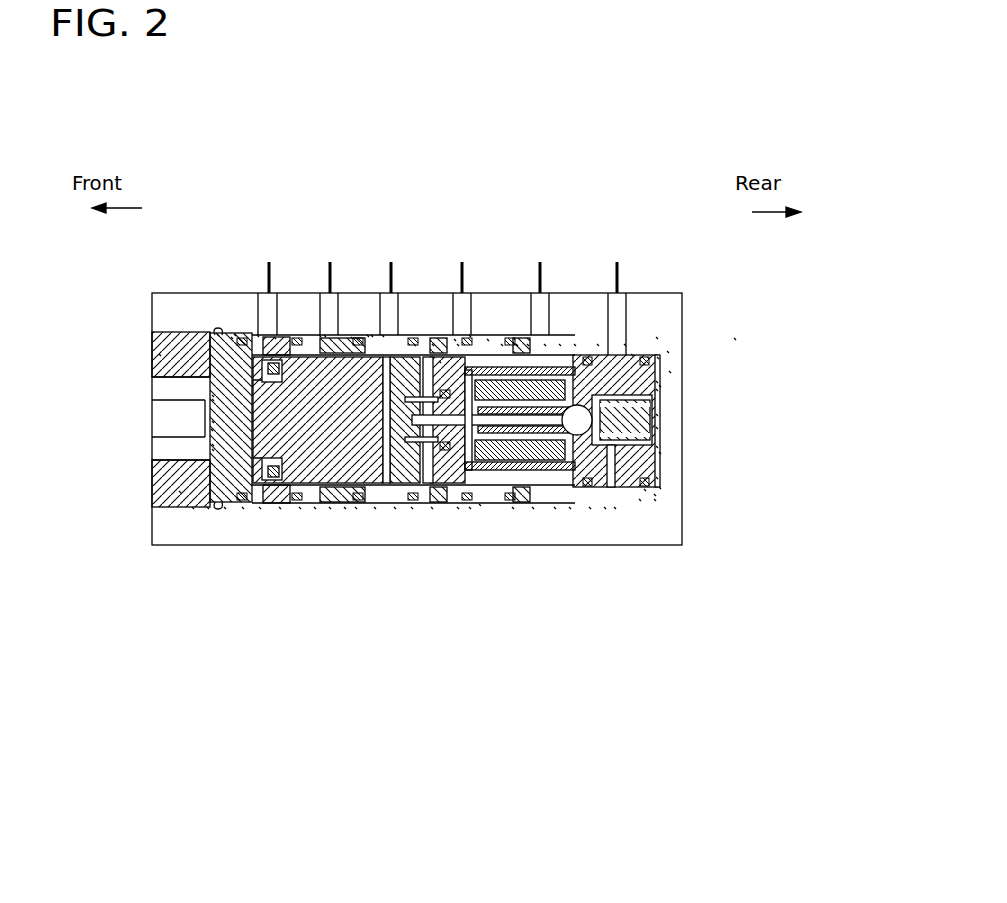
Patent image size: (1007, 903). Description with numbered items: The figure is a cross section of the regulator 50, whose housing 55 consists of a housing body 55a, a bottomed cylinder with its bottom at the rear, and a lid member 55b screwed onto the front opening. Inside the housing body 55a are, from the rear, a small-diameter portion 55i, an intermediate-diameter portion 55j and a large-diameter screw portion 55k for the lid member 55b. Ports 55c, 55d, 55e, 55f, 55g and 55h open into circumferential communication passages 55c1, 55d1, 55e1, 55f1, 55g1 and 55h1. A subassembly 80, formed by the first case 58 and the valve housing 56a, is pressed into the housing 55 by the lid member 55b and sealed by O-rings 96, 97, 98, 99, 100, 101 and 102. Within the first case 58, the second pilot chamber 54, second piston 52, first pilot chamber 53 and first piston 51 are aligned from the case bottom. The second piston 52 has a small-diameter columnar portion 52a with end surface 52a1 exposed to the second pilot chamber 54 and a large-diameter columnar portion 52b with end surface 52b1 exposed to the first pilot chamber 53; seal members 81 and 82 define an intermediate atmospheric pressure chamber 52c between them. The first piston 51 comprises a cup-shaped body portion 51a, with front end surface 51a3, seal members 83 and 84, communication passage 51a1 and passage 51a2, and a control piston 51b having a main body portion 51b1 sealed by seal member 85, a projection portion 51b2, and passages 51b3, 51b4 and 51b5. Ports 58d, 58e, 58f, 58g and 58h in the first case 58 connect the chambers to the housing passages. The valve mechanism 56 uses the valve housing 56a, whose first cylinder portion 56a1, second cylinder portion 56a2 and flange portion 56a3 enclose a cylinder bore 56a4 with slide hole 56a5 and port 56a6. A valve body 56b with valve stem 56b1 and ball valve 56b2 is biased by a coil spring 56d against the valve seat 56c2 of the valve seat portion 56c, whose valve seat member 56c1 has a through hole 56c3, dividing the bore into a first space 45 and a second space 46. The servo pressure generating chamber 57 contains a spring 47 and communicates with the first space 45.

The first space 45 is at (625, 345).
The second space 46 is at (676, 364).
The spring 47 is at (528, 345).
The regulator 50 is at (742, 334).
The first piston 51 is at (450, 503).
The body portion 51a is at (415, 345).
The communication passage 51a1 is at (502, 345).
The passage 51a2 is at (235, 335).
The front end surface 51a3 is at (395, 508).
The control piston 51b is at (433, 345).
The main body portion 51b1 is at (440, 362).
The projection portion 51b2 is at (480, 504).
The passage 51b3 is at (555, 508).
The passage 51b4 is at (213, 396).
The communication passage 51b5 is at (213, 400).
The second piston 52 is at (255, 435).
The small-diameter columnar portion 52a is at (213, 450).
The end surface 52a1 is at (213, 422).
The large-diameter columnar portion 52b is at (356, 508).
The end surface 52b1 is at (412, 508).
The intermediate atmospheric pressure chamber 52c is at (300, 508).
The first pilot chamber 53 is at (352, 338).
The second pilot chamber 54 is at (208, 508).
The housing 55 is at (165, 530).
The housing body 55a is at (193, 508).
The lid member 55b is at (180, 492).
The port 55c is at (657, 338).
The communication passage 55c1 is at (655, 500).
The port 55d is at (560, 345).
The communication passage 55d1 is at (545, 345).
The port 55e is at (470, 336).
The communication passage 55e1 is at (455, 340).
The port 55f is at (383, 336).
The communication passage 55f1 is at (372, 336).
The port 55g is at (320, 336).
The communication passage 55g1 is at (325, 336).
The port 55h is at (258, 336).
The communication passage 55h1 is at (232, 338).
The small-diameter portion 55i is at (660, 488).
The intermediate-diameter portion 55j is at (517, 345).
The large-diameter screw portion 55k is at (160, 355).
The valve mechanism 56 is at (660, 378).
The valve housing 56a is at (657, 478).
The first cylinder portion 56a1 is at (660, 453).
The second cylinder portion 56a2 is at (213, 445).
The flange portion 56a3 is at (605, 508).
The cylinder bore 56a4 is at (657, 447).
The slide hole 56a5 is at (657, 390).
The port 56a6 is at (645, 490).
The valve body 56b is at (657, 415).
The valve stem 56b1 is at (657, 428).
The ball valve 56b2 is at (632, 355).
The valve seat portion 56c is at (615, 508).
The valve seat member 56c1 is at (598, 345).
The valve seat 56c2 is at (658, 358).
The through hole 56c3 is at (640, 500).
The coil spring 56d is at (657, 382).
The servo pressure generating chamber 57 is at (590, 508).
The first case 58 is at (190, 527).
The port 58d is at (575, 345).
The port 58e is at (488, 340).
The port 58f is at (368, 336).
The port 58g is at (275, 338).
The port 58h is at (218, 335).
The subassembly 80 is at (660, 386).
The seal member 81 is at (260, 508).
The seal member 82 is at (330, 508).
The seal member 83 is at (432, 508).
The seal member 84 is at (533, 508).
The seal member 85 is at (458, 345).
The O-ring 96 is at (655, 495).
The O-ring 97 is at (668, 352).
The O-ring 98 is at (513, 508).
The O-ring 99 is at (458, 508).
The O-ring 100 is at (345, 508).
The O-ring 101 is at (280, 508).
The O-ring 102 is at (225, 508).